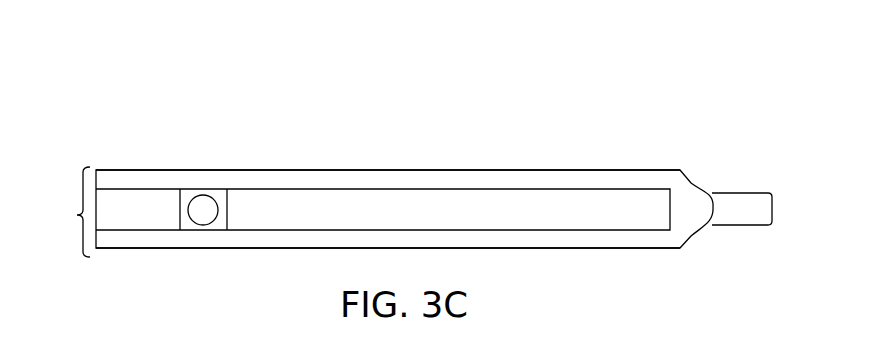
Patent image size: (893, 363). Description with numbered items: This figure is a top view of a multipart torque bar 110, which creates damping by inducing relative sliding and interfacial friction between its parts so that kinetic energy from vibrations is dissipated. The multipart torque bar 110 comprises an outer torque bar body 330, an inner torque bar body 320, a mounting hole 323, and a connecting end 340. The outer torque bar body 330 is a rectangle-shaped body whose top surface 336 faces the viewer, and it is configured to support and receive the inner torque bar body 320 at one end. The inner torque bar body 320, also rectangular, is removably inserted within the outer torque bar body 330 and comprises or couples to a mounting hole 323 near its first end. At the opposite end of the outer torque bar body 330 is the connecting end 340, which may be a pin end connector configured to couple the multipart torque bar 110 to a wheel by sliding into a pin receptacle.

The multipart torque bar 110 is at (383, 136).
The inner torque bar body 320 is at (137, 220).
The mounting hole 323 is at (203, 199).
The outer torque bar body 330 is at (77, 215).
The top surface 336 is at (523, 183).
The connecting end 340 is at (738, 207).